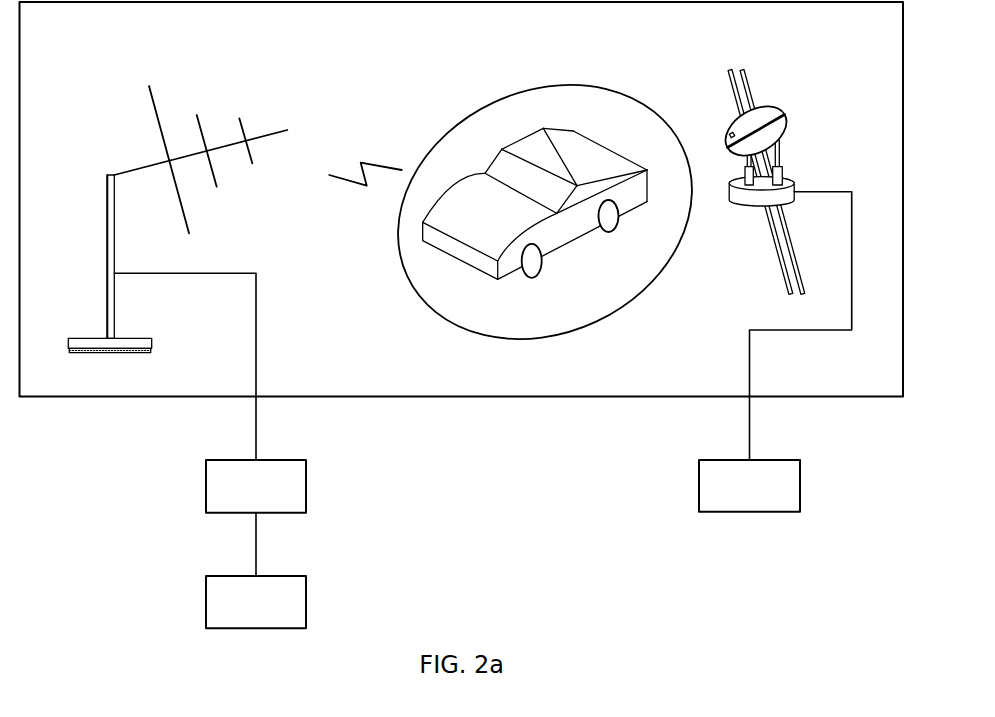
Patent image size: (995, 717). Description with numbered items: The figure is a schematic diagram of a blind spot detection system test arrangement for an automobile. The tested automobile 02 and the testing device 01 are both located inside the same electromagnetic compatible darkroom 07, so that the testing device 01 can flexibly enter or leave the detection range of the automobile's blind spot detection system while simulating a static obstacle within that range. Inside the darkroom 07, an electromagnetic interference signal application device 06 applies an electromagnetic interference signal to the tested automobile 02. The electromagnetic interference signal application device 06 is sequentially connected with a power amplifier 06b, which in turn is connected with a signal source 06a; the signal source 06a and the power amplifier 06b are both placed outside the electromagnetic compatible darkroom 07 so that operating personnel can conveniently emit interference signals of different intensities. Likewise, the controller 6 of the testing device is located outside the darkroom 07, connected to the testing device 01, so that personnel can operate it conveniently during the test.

The testing device 01 is at (782, 108).
The tested automobile 02 is at (592, 140).
The electromagnetic interference signal application device 06 is at (274, 130).
The signal source 06a is at (256, 602).
The power amplifier 06b is at (256, 486).
The controller of the testing device 6 is at (749, 486).
The electromagnetic compatible darkroom 07 is at (542, 396).